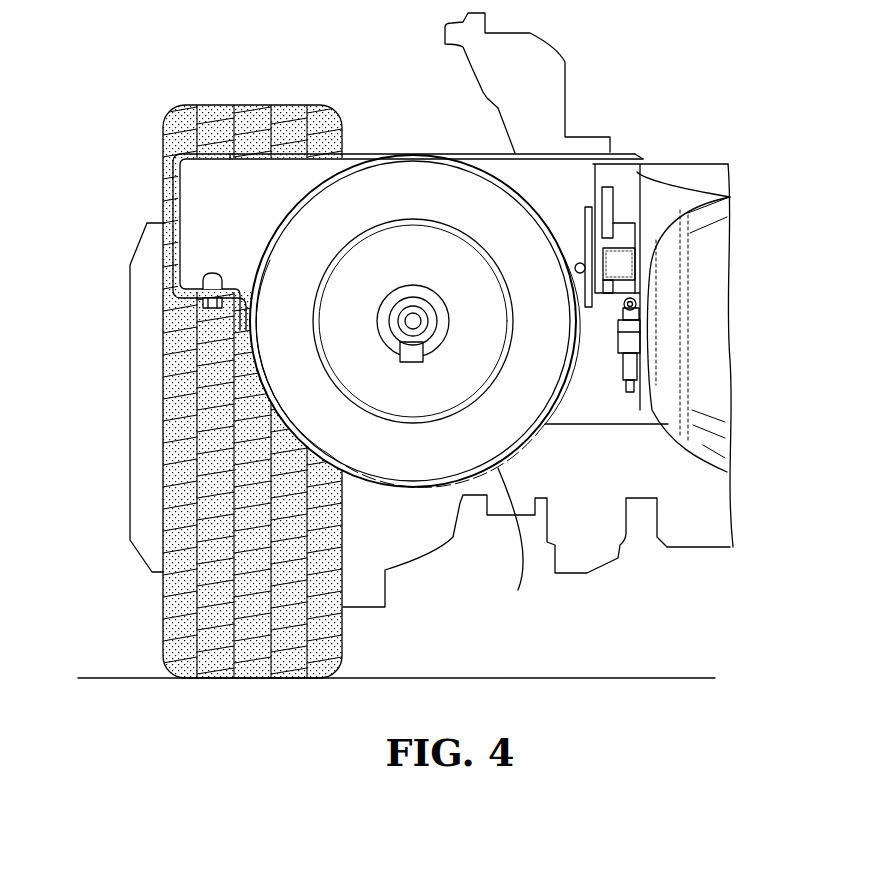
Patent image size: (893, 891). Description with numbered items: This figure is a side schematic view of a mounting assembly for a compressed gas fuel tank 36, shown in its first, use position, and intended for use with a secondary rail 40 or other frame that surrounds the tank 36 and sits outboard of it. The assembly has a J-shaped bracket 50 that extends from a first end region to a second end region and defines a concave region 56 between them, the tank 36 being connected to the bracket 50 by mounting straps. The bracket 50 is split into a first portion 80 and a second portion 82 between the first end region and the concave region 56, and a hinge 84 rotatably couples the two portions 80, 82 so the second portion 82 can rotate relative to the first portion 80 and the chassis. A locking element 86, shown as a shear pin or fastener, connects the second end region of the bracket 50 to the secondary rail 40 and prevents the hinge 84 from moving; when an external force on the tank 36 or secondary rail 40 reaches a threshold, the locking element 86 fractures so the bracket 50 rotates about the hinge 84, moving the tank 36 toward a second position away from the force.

The compressed gas fuel tank 36 is at (413, 182).
The secondary rail 40 is at (177, 268).
The bracket 50 is at (501, 542).
The concave region 56 is at (501, 542).
The first portion 80 is at (590, 223).
The second portion 82 is at (501, 542).
The hinge 84 is at (585, 268).
The locking element 86 is at (207, 305).